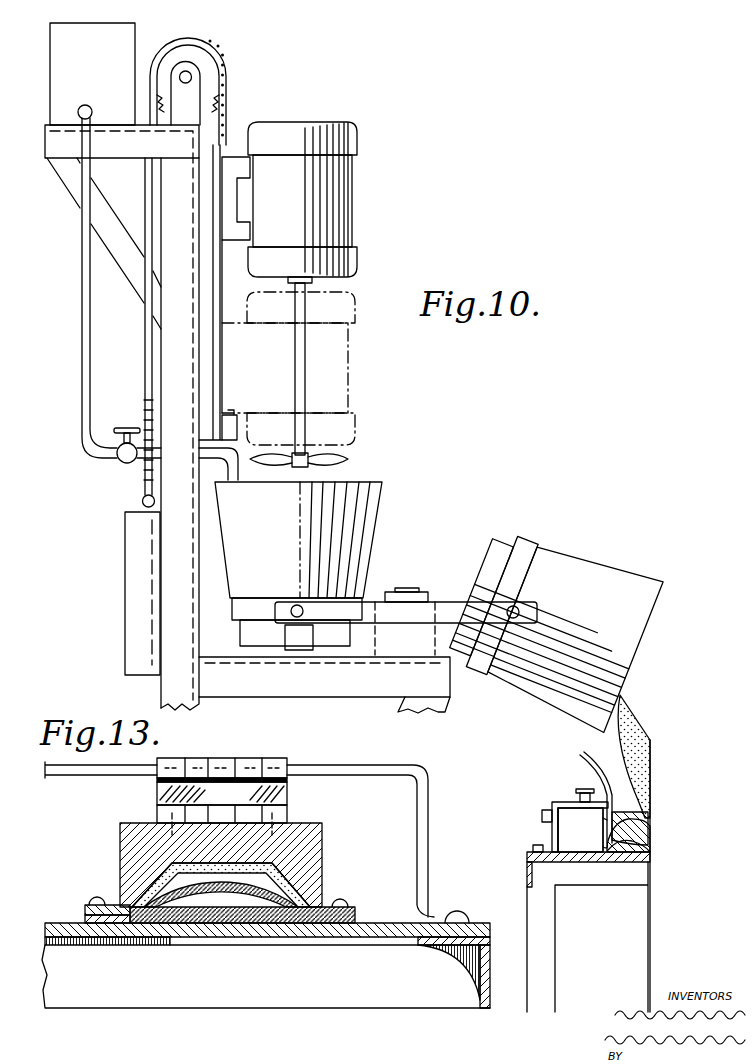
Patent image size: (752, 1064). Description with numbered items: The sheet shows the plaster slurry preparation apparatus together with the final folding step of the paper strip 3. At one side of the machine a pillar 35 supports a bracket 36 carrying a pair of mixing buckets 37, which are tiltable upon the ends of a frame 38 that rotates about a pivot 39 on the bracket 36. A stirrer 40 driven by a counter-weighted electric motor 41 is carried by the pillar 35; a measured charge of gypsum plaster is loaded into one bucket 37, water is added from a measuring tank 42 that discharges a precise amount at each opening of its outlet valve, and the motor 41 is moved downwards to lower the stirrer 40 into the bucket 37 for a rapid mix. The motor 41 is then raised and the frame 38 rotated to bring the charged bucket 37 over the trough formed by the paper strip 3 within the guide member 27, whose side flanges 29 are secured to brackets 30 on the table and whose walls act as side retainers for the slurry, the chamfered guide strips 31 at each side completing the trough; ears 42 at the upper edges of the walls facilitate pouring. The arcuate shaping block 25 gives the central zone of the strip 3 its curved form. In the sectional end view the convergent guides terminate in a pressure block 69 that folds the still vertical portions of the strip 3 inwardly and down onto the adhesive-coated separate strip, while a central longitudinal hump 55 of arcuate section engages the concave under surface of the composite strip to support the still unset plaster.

In FIG. 10, the paper strip 3 is at (603, 829).
In FIG. 13, the paper strip 3 is at (312, 868).
In FIG. 10, the shaping block 25 is at (640, 850).
In FIG. 10, the guide member 27 is at (609, 812).
In FIG. 10, the side flanges 29 is at (560, 802).
In FIG. 10, the brackets 30 is at (553, 836).
In FIG. 10, the guide strips 31 is at (585, 850).
In FIG. 10, the pillar 35 is at (168, 697).
In FIG. 10, the bracket 36 is at (345, 678).
In FIG. 10, the mixing buckets 37 is at (345, 527).
In FIG. 10, the frame 38 is at (452, 610).
In FIG. 10, the pivot 39 is at (400, 592).
In FIG. 10, the stirrer 40 is at (335, 460).
In FIG. 10, the electric motor 41 is at (335, 207).
In FIG. 10, the tank 42 is at (583, 760).
In FIG. 13, the hump 55 is at (225, 912).
In FIG. 13, the pressure block 69 is at (283, 834).